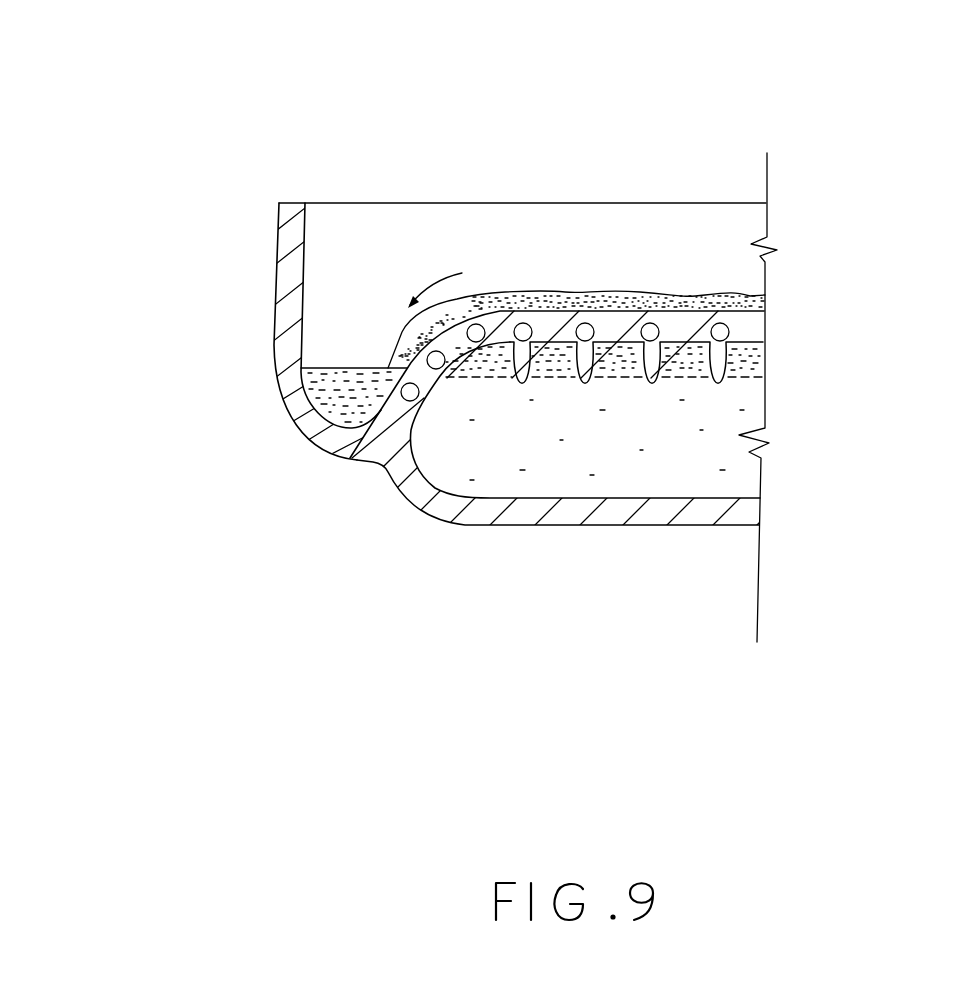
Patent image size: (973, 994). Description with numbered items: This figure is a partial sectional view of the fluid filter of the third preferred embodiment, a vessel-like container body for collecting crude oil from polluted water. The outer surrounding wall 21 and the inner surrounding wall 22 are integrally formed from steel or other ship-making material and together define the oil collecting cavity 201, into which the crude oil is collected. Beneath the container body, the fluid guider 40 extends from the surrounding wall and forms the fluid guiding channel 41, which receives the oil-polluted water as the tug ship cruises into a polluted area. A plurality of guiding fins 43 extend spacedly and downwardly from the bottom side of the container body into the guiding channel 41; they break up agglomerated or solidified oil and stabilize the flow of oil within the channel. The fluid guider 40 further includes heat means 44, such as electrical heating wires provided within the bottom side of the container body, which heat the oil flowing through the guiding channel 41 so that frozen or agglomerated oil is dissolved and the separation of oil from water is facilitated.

The outer surrounding wall 21 is at (287, 276).
The oil collecting cavity 201 is at (353, 350).
The inner surrounding wall 22 is at (457, 353).
The heat means 44 is at (720, 334).
The guiding fins 43 is at (717, 362).
The fluid guiding channel 41 is at (684, 450).
The fluid guider 40 is at (693, 515).